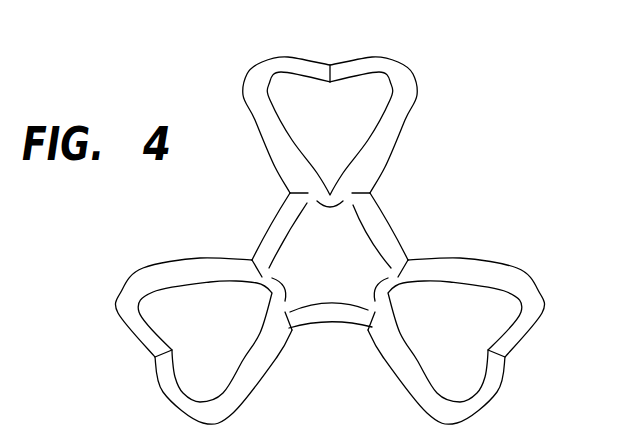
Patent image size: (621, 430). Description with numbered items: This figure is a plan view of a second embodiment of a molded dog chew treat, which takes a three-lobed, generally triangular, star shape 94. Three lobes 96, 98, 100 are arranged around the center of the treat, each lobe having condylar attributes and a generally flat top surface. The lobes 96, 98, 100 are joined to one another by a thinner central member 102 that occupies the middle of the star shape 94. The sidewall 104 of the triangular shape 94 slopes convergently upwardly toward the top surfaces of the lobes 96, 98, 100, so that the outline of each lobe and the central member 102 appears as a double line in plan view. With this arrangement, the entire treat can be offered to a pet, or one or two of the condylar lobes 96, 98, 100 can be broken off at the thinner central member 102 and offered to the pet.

The star shape 94 is at (352, 295).
The lobe 96 is at (295, 98).
The lobe 98 is at (178, 315).
The lobe 100 is at (478, 327).
The central member 102 is at (328, 310).
The sidewall 104 is at (492, 388).